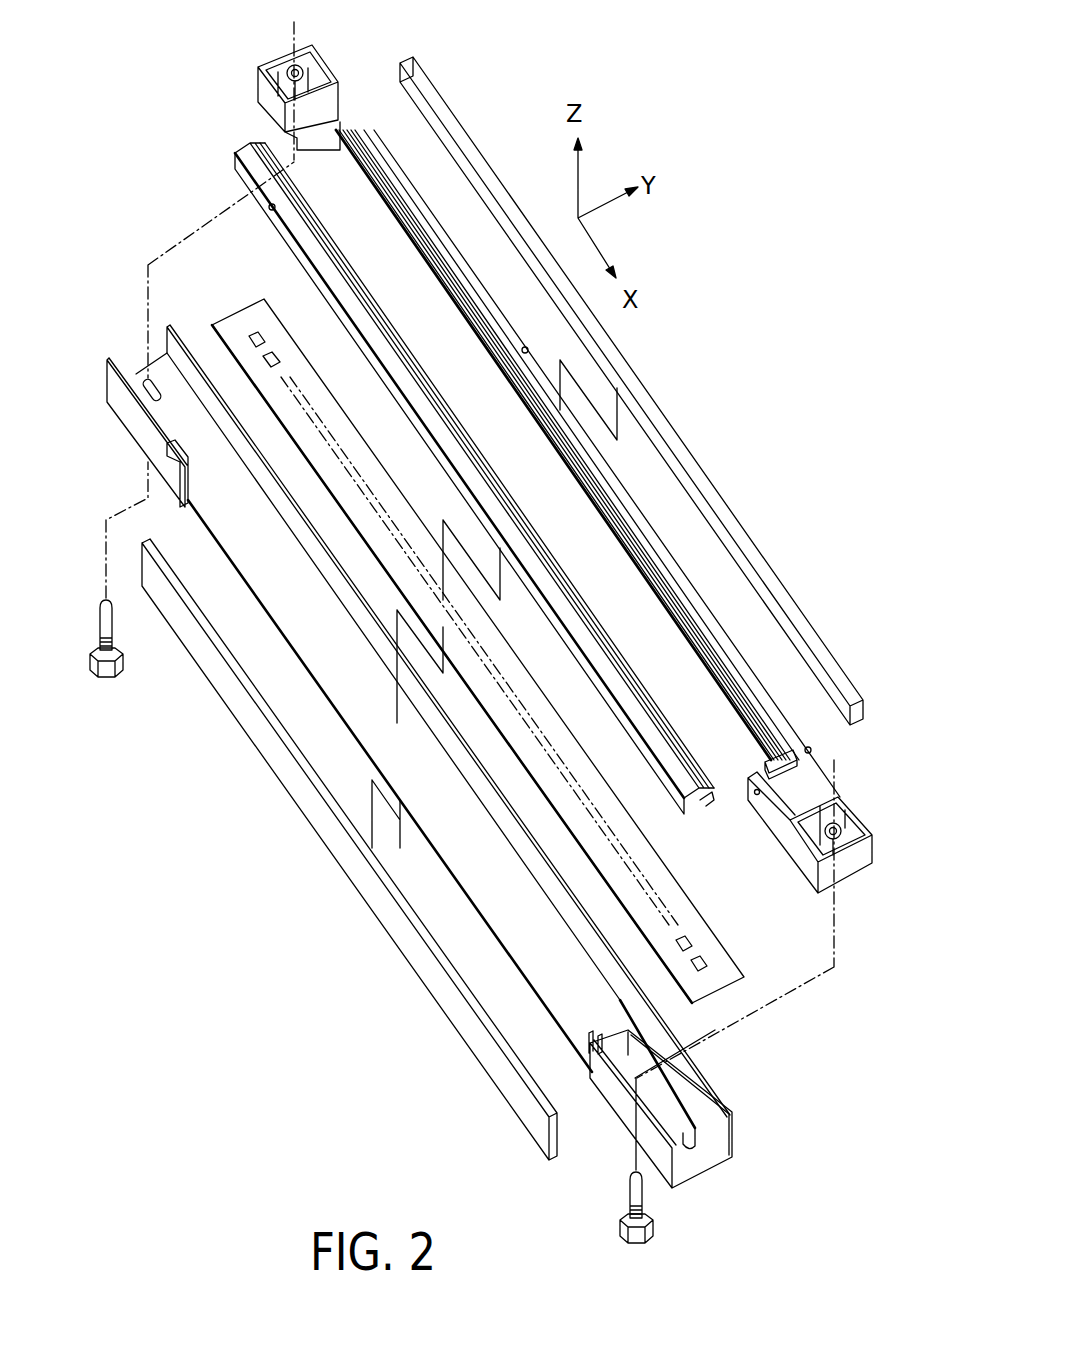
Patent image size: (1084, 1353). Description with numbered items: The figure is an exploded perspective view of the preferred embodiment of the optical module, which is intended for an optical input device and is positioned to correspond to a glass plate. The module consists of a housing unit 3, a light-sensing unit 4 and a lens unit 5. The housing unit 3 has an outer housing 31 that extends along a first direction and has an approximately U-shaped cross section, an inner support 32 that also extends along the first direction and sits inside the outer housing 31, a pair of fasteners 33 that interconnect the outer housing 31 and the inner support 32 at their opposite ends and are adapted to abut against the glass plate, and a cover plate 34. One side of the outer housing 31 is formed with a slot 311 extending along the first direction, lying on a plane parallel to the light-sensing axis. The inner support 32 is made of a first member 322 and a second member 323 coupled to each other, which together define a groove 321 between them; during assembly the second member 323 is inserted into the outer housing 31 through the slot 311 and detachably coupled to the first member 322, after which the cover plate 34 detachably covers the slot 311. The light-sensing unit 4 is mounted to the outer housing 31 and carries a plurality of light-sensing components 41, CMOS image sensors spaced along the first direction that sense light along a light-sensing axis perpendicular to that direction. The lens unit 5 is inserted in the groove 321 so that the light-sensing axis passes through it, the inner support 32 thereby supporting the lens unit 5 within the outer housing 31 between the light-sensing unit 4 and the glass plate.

The housing unit 3 is at (413, 804).
The outer housing 31 is at (126, 428).
The slot 311 is at (272, 598).
The inner support 32 is at (816, 762).
The groove 321 is at (572, 494).
The first member 322 is at (717, 634).
The second member 323 is at (343, 261).
The fasteners 33 is at (630, 1182).
The cover plate 34 is at (291, 783).
The light-sensing unit 4 is at (497, 680).
The light-sensing components 41 is at (256, 333).
The lens unit 5 is at (705, 478).